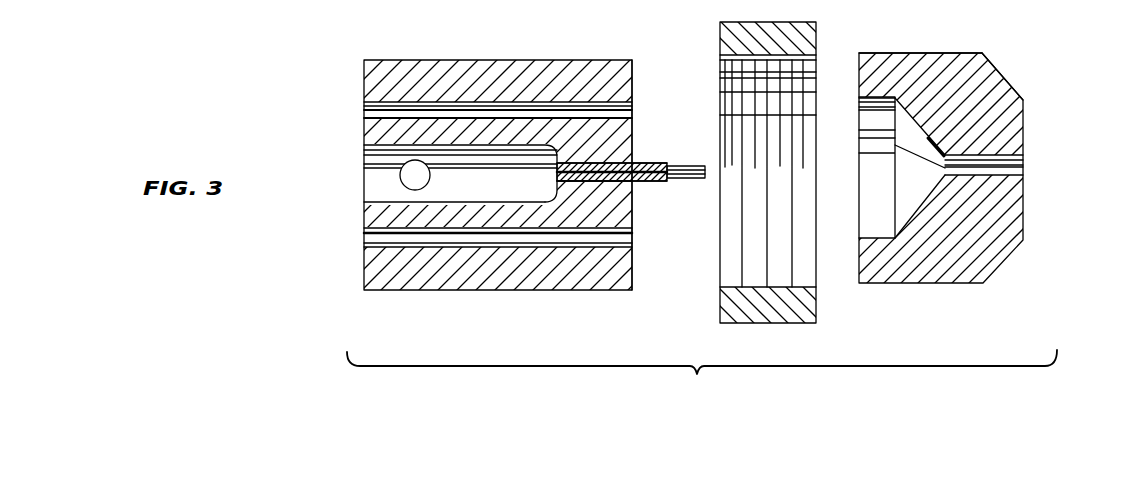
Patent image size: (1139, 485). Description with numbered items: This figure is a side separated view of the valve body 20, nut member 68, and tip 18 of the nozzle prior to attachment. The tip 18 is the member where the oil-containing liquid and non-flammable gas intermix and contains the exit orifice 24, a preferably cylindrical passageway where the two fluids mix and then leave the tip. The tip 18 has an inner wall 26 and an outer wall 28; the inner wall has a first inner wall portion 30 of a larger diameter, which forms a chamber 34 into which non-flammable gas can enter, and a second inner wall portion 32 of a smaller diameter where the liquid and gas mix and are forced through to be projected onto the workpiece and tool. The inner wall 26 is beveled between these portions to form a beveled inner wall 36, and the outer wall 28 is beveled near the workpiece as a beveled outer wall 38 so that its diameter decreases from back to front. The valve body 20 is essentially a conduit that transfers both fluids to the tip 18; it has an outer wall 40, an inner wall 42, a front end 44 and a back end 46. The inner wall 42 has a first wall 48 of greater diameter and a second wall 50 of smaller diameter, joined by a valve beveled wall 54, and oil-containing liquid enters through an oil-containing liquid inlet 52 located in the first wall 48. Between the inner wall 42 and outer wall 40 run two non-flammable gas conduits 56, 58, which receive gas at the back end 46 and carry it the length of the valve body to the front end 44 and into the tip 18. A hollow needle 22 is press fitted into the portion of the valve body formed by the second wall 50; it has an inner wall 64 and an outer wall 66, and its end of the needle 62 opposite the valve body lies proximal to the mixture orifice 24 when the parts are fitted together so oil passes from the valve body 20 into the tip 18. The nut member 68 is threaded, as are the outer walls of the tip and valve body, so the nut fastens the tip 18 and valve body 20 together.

The tip 18 is at (1020, 280).
The valve body 20 is at (420, 302).
The hollow needle 22 is at (661, 152).
The exit orifice 24 is at (1045, 148).
The inner wall 26 is at (920, 225).
The outer wall 28 is at (897, 53).
The first inner wall portion 30 is at (862, 118).
The second inner wall portion 32 is at (1013, 170).
The chamber 34 is at (875, 189).
The beveled inner wall 36 is at (912, 140).
The beveled outer wall 38 is at (1010, 73).
The outer wall 40 is at (414, 48).
The inner wall 42 is at (380, 240).
The front end 44 is at (633, 210).
The back end 46 is at (364, 77).
The first wall 48 is at (370, 200).
The second wall 50 is at (595, 183).
The oil-containing liquid inlet 52 is at (418, 172).
The valve beveled wall 54 is at (535, 203).
The non-flammable gas conduit 56 is at (364, 115).
The non-flammable gas conduit 58 is at (372, 245).
The end of the needle 62 is at (674, 165).
The inner wall 64 is at (667, 180).
The outer wall 66 is at (638, 159).
The nut member 68 is at (777, 313).